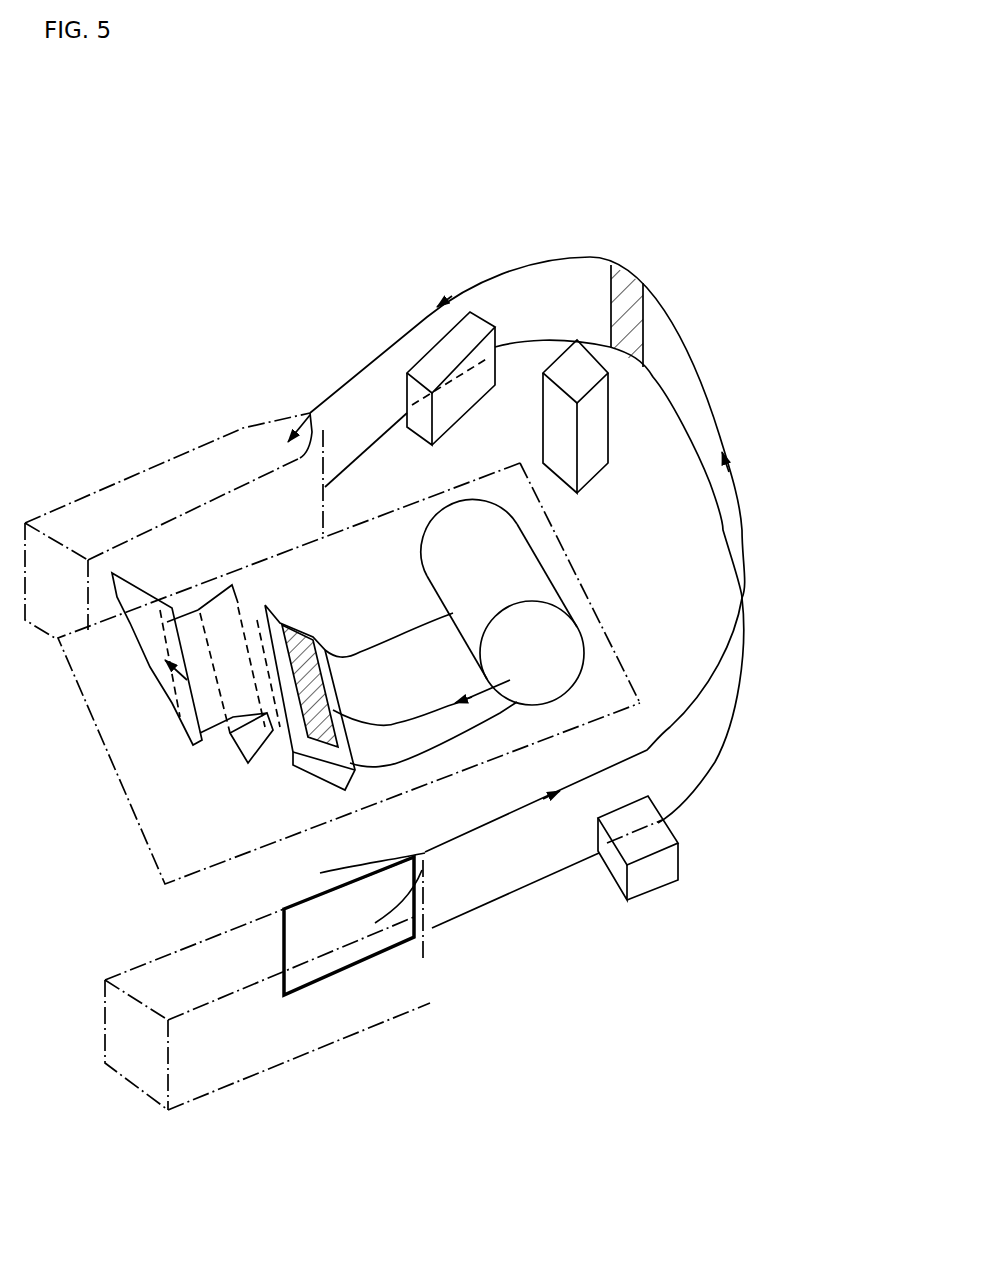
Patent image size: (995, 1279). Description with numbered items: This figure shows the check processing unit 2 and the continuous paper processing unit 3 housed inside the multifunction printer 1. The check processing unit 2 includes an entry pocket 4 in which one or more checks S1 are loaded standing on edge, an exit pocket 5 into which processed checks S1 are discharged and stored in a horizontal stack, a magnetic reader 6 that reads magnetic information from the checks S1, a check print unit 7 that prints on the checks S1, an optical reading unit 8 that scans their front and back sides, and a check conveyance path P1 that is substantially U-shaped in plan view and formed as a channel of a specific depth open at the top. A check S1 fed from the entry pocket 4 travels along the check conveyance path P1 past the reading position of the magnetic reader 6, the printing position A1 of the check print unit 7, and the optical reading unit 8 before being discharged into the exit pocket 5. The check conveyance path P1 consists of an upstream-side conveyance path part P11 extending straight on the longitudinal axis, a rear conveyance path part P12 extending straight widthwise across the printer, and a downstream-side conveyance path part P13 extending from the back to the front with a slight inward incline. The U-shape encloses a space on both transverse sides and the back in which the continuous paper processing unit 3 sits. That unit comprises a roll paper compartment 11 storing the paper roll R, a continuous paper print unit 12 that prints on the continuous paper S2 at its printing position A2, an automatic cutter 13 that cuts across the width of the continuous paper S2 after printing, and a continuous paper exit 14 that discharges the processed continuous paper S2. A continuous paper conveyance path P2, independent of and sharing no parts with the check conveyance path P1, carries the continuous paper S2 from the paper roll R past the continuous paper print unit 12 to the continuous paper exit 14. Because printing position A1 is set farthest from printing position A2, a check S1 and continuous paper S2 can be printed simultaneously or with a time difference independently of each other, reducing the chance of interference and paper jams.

The multifunction printer 1 is at (683, 137).
The check processing unit 2 is at (726, 296).
The continuous paper processing unit 3 is at (609, 731).
The entry pocket 4 is at (240, 1027).
The exit pocket 5 is at (128, 498).
The magnetic reader 6 is at (688, 835).
The check print unit 7 is at (577, 338).
The optical reading unit 8 is at (437, 363).
The roll paper compartment 11 is at (590, 647).
The continuous paper print unit 12 is at (300, 787).
The automatic cutter 13 is at (233, 763).
The continuous paper exit 14 is at (190, 740).
The printing position of the check print unit A1 is at (626, 295).
The printing position of the continuous paper print unit A2 is at (283, 622).
The check conveyance path P1 is at (721, 373).
The continuous paper conveyance path P2 is at (399, 713).
The upstream-side conveyance path part P11 is at (497, 822).
The rear conveyance path part P12 is at (743, 505).
The downstream-side conveyance path part P13 is at (389, 352).
The paper roll R is at (510, 552).
The check S1 is at (320, 917).
The continuous paper S2 is at (413, 647).